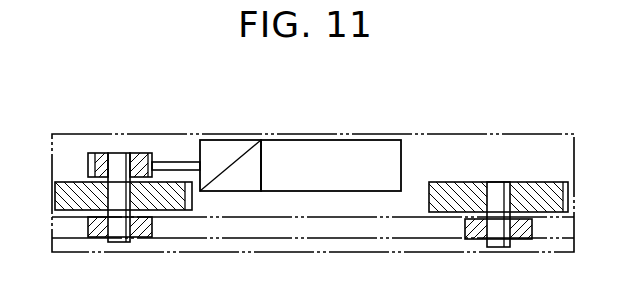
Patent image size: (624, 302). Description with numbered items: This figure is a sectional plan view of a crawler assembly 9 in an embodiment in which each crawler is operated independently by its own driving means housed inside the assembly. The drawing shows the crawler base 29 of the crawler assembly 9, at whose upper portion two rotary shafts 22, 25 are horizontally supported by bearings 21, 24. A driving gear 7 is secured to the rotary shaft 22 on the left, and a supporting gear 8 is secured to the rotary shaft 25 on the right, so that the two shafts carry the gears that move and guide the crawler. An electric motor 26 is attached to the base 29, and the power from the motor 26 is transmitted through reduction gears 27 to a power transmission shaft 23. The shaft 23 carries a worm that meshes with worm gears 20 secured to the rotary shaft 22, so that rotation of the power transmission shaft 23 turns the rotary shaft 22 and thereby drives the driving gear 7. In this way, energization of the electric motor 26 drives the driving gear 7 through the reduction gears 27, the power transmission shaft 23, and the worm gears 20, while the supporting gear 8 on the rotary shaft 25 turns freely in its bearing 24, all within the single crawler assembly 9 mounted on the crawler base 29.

The driving gear 7 is at (67, 188).
The supporting gear 8 is at (540, 192).
The crawler assembly 9 is at (90, 124).
The worm gears 20 is at (142, 153).
The bearing 21 is at (157, 233).
The rotary shaft 22 is at (120, 150).
The power transmission shaft 23 is at (181, 162).
The bearing 24 is at (525, 242).
The rotary shaft 25 is at (495, 247).
The electric motor 26 is at (348, 150).
The reduction gears 27 is at (228, 150).
The crawler base 29 is at (262, 228).